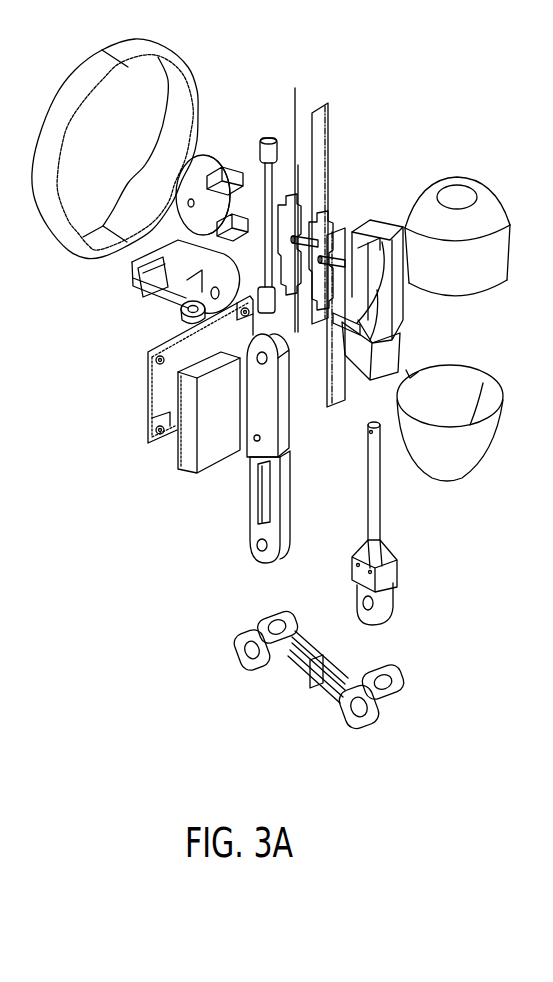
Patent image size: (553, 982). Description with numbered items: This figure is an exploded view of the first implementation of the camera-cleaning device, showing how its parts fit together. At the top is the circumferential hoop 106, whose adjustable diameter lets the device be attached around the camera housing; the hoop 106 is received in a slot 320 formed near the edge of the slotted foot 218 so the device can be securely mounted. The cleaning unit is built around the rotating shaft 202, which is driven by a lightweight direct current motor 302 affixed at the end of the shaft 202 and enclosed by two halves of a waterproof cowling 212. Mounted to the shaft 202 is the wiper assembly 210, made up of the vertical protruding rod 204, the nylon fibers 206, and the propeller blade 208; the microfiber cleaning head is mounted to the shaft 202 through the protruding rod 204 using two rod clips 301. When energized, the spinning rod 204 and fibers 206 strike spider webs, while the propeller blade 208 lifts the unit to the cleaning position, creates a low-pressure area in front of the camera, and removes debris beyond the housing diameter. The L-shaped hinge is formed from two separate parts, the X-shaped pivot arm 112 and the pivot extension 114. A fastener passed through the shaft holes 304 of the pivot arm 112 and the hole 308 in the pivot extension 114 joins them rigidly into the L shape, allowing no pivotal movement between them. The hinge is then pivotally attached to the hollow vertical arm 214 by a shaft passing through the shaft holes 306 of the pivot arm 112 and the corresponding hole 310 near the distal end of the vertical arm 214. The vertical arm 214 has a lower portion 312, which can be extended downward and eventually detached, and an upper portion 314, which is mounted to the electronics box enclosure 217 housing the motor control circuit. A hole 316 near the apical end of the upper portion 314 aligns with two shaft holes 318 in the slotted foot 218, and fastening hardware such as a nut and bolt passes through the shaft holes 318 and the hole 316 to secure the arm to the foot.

The circumferential hoop 106 is at (127, 218).
The rod clips 301 is at (227, 173).
The protruding rod 204 is at (271, 137).
The nylon fibers 206 is at (315, 205).
The propeller blade 208 is at (327, 170).
The rotating shaft 202 is at (305, 238).
The direct current motor 302 is at (403, 313).
The cowling 212 is at (452, 170).
The wiper assembly 210 is at (490, 430).
The slotted foot 218 is at (158, 265).
The slot 320 is at (153, 288).
The shaft holes 318 is at (185, 315).
The electronics box enclosure 217 is at (190, 445).
The hole 316 is at (265, 360).
The upper portion 314 is at (278, 363).
The vertical arm 214 is at (250, 480).
The lower portion 312 is at (273, 490).
The hole 310 is at (258, 547).
The pivot extension 114 is at (380, 540).
The hole 308 is at (373, 603).
The pivot arm 112 is at (294, 702).
The shaft holes 306 is at (240, 652).
The shaft holes 304 is at (380, 698).